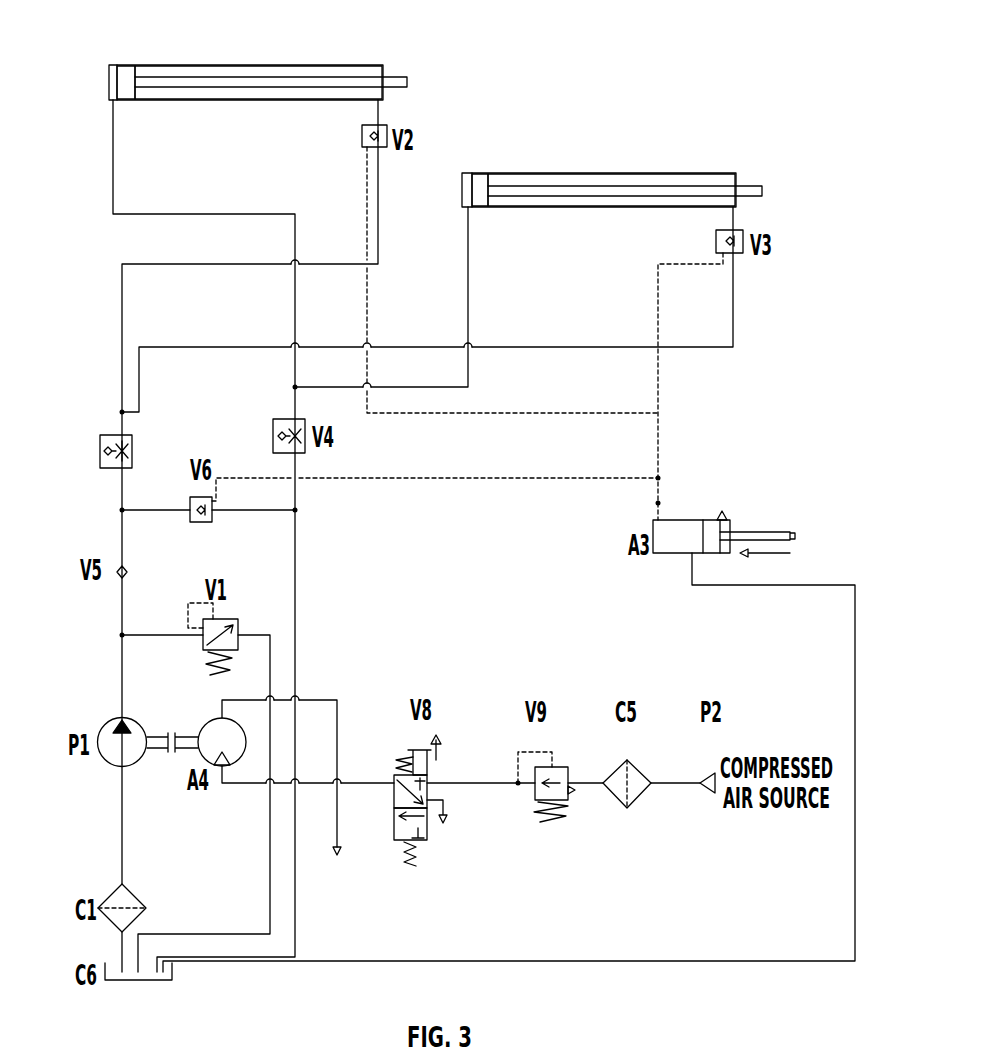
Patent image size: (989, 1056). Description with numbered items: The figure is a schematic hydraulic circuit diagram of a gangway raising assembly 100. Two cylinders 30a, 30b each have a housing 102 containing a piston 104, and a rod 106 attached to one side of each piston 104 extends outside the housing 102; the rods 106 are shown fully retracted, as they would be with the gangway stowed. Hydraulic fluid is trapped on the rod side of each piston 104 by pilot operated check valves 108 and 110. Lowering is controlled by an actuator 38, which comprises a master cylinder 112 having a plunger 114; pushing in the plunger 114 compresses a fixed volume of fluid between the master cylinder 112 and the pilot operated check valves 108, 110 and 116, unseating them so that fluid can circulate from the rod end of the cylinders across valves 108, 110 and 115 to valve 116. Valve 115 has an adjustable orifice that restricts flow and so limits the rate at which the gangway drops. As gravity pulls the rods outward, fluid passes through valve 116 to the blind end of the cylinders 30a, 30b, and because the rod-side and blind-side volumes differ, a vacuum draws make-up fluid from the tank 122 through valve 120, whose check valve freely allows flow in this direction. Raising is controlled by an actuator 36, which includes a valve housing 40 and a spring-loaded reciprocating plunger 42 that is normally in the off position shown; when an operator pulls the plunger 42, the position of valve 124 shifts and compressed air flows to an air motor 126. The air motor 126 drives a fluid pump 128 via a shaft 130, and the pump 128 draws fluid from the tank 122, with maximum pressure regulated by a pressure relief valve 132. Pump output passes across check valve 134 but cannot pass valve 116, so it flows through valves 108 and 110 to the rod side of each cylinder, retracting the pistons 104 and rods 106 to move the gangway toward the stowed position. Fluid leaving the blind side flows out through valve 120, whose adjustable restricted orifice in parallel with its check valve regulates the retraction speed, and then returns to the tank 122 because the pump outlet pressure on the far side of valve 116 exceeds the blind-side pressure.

The cylinder 30a is at (303, 65).
The cylinder 30b is at (670, 173).
The housing 102 is at (175, 100).
The piston 104 is at (127, 90).
The rod 106 is at (393, 77).
The pilot operated check valve 108 is at (362, 135).
The pilot operated check valve 110 is at (716, 245).
The master cylinder 112 is at (690, 520).
The plunger 114 is at (757, 532).
The valve 115 is at (100, 455).
The pilot operated check valve 116 is at (200, 522).
The valve 120 is at (273, 435).
The tank 122 is at (172, 968).
The valve 124 is at (427, 825).
The air motor 126 is at (198, 752).
The fluid pump 128 is at (112, 763).
The shaft 130 is at (160, 737).
The pressure relief valve 132 is at (232, 619).
The check valve 134 is at (120, 578).
The actuator 36 is at (416, 810).
The actuator 38 is at (709, 550).
The valve housing 40 is at (394, 797).
The reciprocating plunger 42 is at (427, 768).
The gangway raising assembly 100 is at (416, 827).